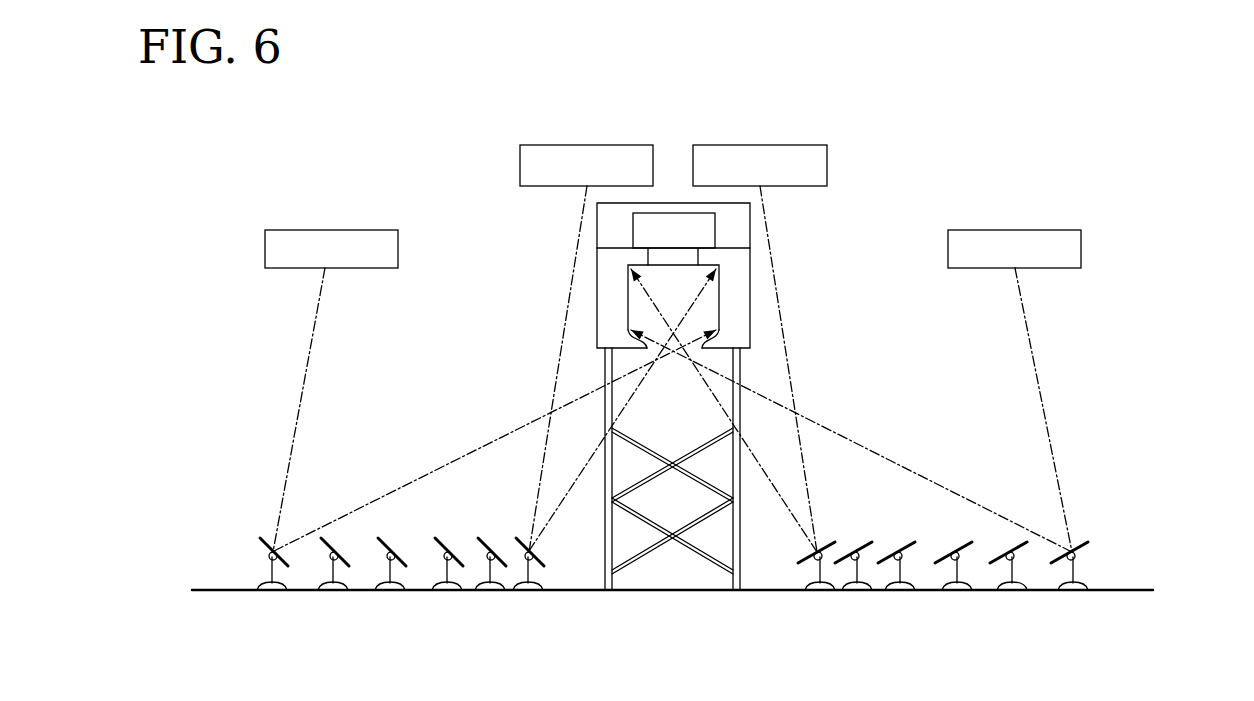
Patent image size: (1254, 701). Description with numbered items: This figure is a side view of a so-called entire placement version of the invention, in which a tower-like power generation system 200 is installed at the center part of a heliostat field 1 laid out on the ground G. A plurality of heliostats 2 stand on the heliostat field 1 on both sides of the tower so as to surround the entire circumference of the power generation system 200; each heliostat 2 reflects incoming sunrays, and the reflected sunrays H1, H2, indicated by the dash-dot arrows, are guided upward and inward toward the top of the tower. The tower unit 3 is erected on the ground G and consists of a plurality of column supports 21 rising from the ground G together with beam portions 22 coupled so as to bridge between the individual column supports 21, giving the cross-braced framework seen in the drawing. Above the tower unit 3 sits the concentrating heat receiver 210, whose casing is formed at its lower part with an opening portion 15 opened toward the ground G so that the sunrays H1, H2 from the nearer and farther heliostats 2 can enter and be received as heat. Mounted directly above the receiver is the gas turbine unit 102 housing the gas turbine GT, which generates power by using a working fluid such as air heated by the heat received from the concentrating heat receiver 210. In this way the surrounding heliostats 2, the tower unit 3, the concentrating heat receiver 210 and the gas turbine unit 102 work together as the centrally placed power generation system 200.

The heliostat field 1 is at (1130, 590).
The heliostat 2 is at (528, 572).
The tower unit 3 is at (650, 506).
The column support 21 is at (608, 575).
The beam portion 22 is at (693, 548).
The opening portion 15 is at (645, 350).
The gas turbine unit 102 is at (597, 225).
The power generation system 200 is at (610, 228).
The concentrating heat receiver 210 is at (628, 297).
The gas turbine GT is at (674, 230).
The ground G is at (1153, 590).
The sunray H1 is at (782, 501).
The sunray H2 is at (938, 485).